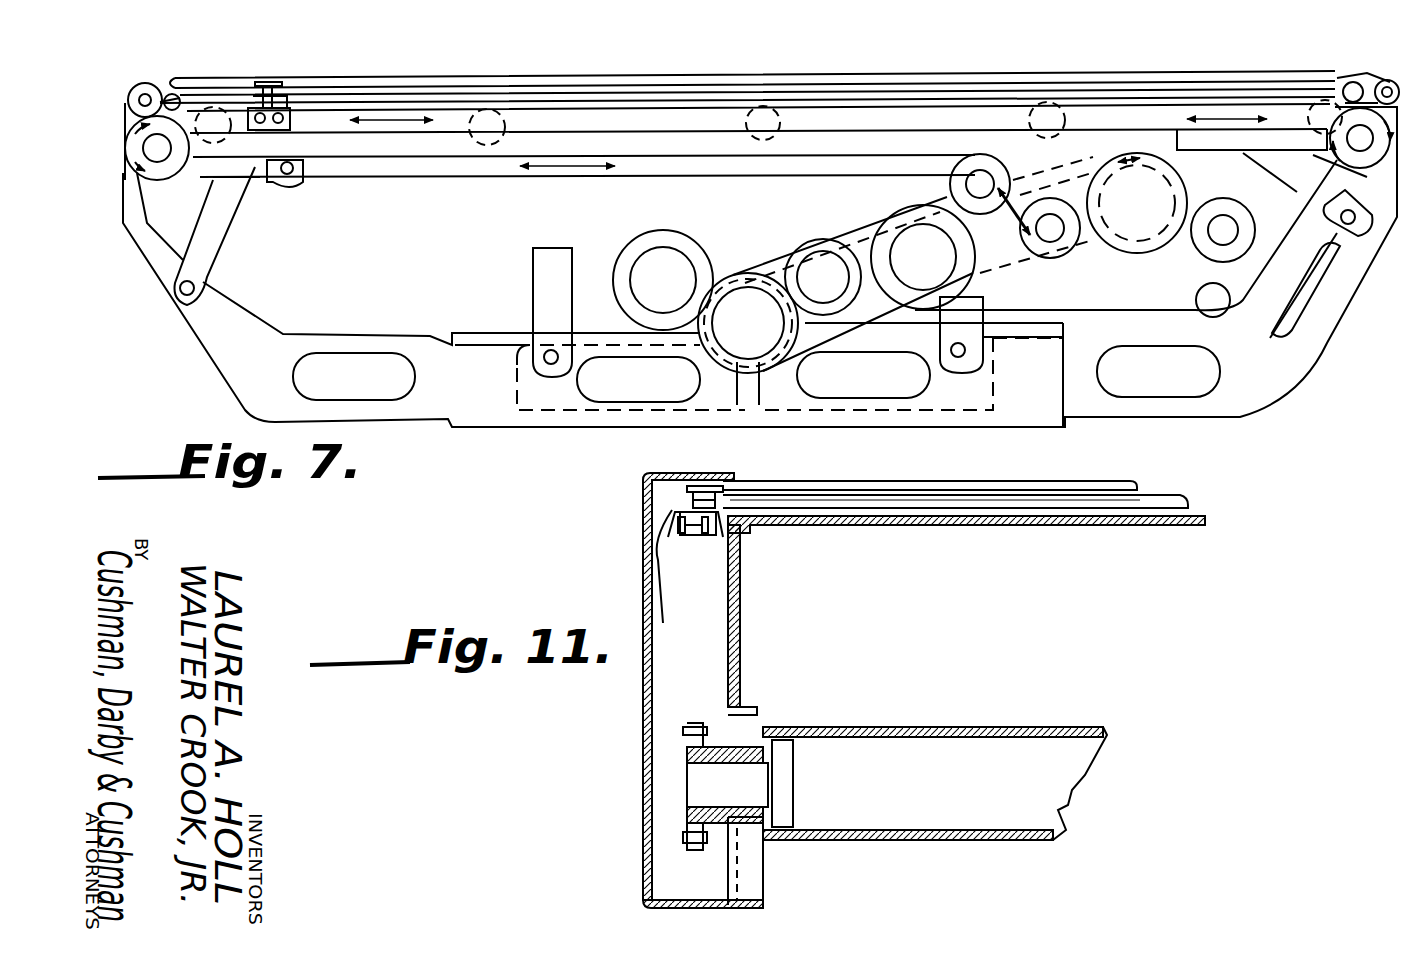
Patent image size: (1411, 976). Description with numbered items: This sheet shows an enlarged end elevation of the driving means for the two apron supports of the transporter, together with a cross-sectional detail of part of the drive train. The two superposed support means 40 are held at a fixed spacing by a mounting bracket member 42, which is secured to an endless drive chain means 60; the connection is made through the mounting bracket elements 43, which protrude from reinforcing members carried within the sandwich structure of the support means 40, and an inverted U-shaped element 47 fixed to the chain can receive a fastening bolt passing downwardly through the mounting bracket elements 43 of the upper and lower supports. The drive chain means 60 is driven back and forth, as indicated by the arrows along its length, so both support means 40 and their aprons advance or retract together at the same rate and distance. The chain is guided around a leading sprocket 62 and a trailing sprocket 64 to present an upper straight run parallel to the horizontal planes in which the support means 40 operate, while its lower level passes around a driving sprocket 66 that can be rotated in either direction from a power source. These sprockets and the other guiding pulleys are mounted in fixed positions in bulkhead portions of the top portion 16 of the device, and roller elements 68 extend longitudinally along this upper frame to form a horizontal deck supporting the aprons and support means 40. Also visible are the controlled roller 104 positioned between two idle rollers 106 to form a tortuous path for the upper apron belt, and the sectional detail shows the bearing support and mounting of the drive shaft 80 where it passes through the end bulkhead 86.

In FIG. 7, the top portion 16 is at (1305, 346).
In FIG. 7, the support means 40 is at (885, 86).
In FIG. 11, the support means 40 is at (790, 492).
In FIG. 7, the mounting bracket member 42 is at (297, 95).
In FIG. 11, the mounting bracket elements 43 is at (712, 490).
In FIG. 7, the inverted U-shaped element 47 is at (297, 133).
In FIG. 11, the inverted U-shaped element 47 is at (679, 578).
In FIG. 7, the endless drive chain means 60 is at (610, 112).
In FIG. 11, the endless drive chain means 60 is at (695, 538).
In FIG. 7, the leading sprocket 62 is at (1320, 158).
In FIG. 7, the trailing sprocket 64 is at (127, 145).
In FIG. 7, the driving sprocket 66 is at (1150, 246).
In FIG. 11, the driving sprocket 66 is at (680, 732).
In FIG. 7, the roller elements 68 is at (207, 108).
In FIG. 11, the drive shaft 80 is at (905, 727).
In FIG. 11, the end bulkhead 86 is at (742, 674).
In FIG. 7, the roller 104 is at (768, 334).
In FIG. 7, the idle rollers 106 is at (672, 242).